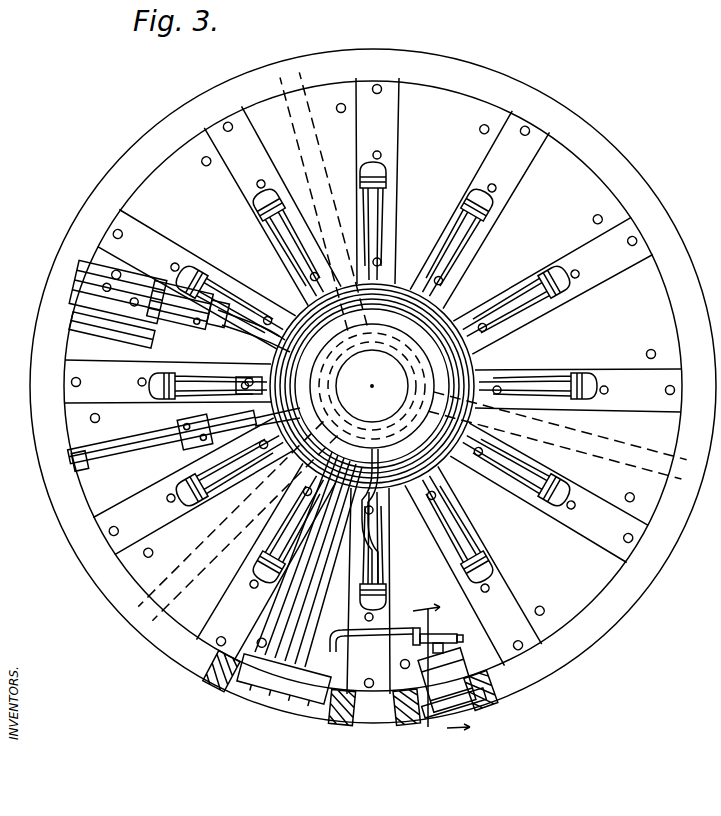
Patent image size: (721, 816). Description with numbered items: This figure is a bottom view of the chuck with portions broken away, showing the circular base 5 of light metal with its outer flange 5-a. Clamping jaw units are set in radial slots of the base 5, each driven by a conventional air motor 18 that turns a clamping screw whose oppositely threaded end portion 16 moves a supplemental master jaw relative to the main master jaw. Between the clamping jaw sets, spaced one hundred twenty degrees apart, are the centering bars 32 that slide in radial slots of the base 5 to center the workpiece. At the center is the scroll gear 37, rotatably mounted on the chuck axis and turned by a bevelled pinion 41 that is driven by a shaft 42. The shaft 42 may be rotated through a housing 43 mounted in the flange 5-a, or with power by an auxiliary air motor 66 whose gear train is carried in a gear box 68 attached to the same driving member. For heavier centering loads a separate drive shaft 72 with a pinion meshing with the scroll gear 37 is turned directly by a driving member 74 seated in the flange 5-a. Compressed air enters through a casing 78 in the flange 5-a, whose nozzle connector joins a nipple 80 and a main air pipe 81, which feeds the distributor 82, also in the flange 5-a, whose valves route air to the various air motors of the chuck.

The base 5 is at (188, 216).
The flange 5-a is at (97, 191).
The threaded end portion 16 is at (432, 671).
The air motor 18 is at (260, 216).
The centering bar 32 is at (302, 125).
The scroll gear 37 is at (372, 386).
The bevelled pinion 41 is at (326, 374).
The shaft 42 is at (152, 328).
The housing 43 is at (100, 334).
The air motor 66 is at (232, 298).
The gear box 68 is at (88, 297).
The drive shaft 72 is at (130, 442).
The driving member 74 is at (93, 464).
The casing 78 is at (425, 665).
The nipple 80 is at (457, 641).
The main air pipe 81 is at (360, 628).
The distributor 82 is at (272, 690).